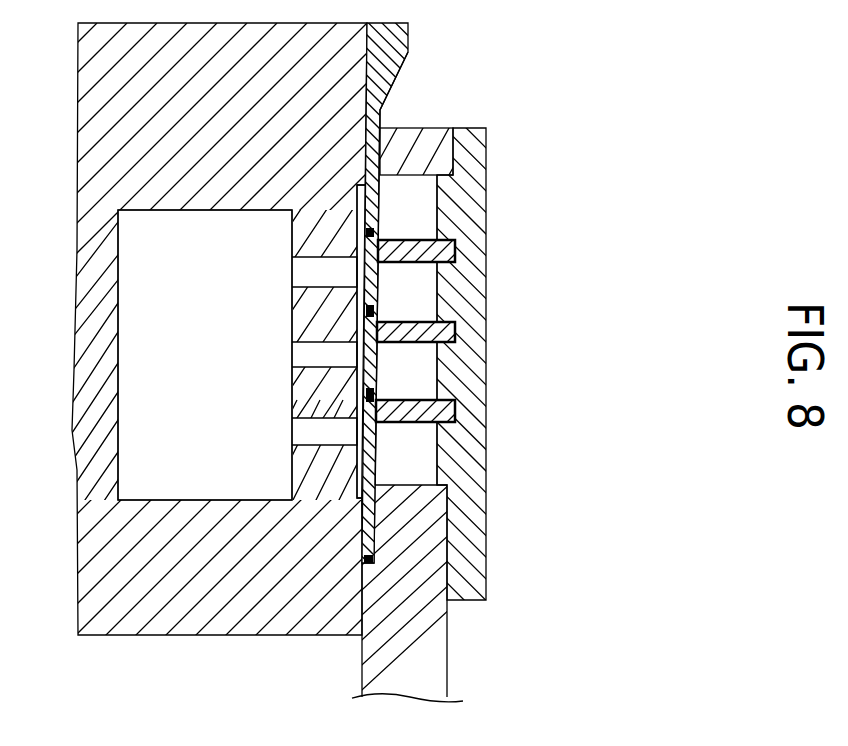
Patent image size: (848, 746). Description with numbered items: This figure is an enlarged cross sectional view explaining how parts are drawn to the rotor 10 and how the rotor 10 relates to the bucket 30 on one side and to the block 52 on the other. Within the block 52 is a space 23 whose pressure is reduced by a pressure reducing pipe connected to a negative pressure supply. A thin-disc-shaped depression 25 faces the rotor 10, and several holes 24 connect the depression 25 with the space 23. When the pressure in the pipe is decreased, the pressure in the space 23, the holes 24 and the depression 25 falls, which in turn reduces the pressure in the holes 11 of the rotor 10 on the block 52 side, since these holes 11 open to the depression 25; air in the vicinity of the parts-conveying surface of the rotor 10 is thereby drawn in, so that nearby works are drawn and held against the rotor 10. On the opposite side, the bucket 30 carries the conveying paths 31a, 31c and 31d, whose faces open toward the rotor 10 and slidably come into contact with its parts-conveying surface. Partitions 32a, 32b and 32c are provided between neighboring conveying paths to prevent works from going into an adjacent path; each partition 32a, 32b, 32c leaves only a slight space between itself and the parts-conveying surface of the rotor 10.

The rotor 10 is at (404, 68).
The depression 25 is at (381, 118).
The conveying path 31d is at (422, 192).
The partition 32c is at (420, 243).
The conveying path 31c is at (425, 284).
The partition 32b is at (423, 318).
The hole 11 is at (375, 472).
The partition 32a is at (420, 421).
The conveying path 31a is at (423, 468).
The bucket 30 is at (464, 604).
The block 52 is at (205, 637).
The space 23 is at (118, 496).
The hole 24 is at (305, 437).